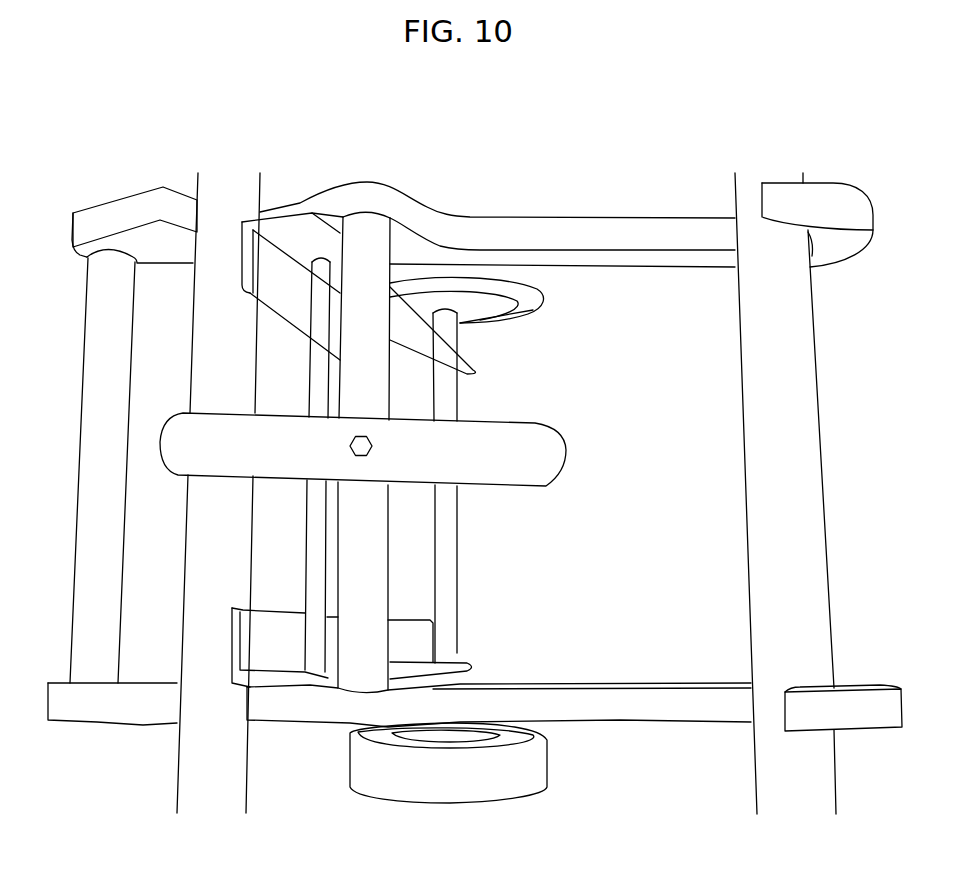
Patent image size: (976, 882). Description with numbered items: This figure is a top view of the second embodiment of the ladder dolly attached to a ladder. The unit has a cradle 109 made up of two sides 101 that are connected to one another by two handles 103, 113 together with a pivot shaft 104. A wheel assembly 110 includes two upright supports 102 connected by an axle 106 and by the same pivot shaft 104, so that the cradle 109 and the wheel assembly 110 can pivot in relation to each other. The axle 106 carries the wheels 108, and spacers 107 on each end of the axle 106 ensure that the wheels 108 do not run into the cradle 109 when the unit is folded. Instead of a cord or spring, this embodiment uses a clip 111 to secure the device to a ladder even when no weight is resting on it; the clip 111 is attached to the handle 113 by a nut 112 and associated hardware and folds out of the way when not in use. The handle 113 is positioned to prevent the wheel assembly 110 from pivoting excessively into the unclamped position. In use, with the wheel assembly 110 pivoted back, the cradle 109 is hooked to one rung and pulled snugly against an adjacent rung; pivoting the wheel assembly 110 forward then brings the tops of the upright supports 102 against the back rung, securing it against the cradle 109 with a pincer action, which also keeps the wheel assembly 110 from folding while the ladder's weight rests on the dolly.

The side 101 is at (838, 702).
The upright support 102 is at (393, 637).
The handle 103 is at (85, 400).
The pivot shaft 104 is at (308, 633).
The axle 106 is at (445, 655).
The spacer 107 is at (447, 330).
The wheel 108 is at (530, 757).
The cradle 109 is at (447, 192).
The wheel assembly 110 is at (463, 585).
The clip 111 is at (240, 432).
The nut 112 is at (360, 436).
The handle 113 is at (377, 243).